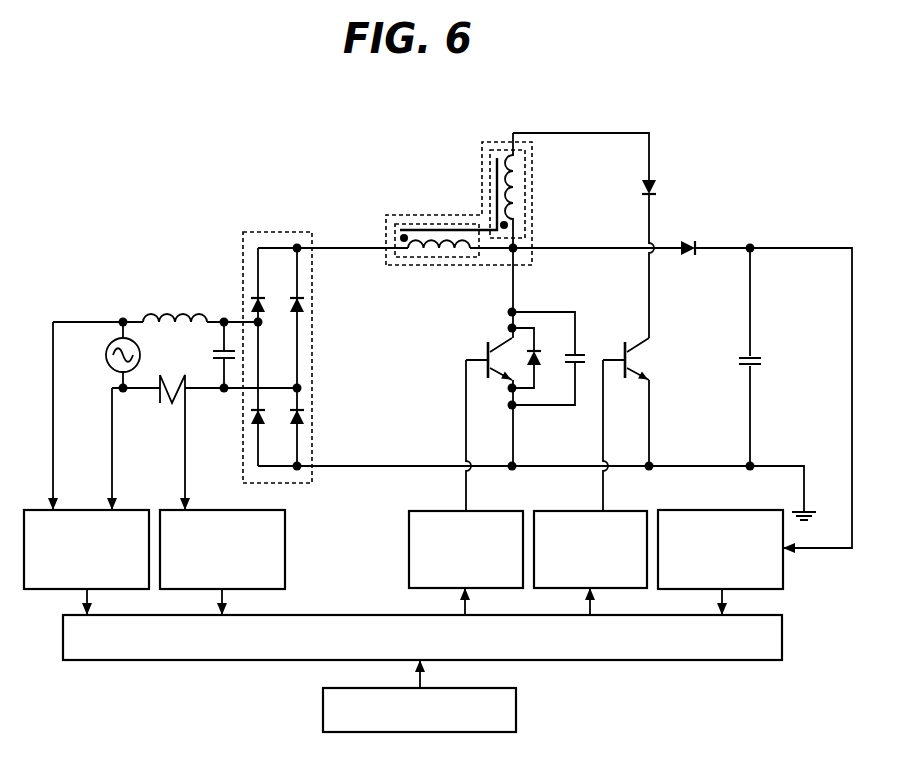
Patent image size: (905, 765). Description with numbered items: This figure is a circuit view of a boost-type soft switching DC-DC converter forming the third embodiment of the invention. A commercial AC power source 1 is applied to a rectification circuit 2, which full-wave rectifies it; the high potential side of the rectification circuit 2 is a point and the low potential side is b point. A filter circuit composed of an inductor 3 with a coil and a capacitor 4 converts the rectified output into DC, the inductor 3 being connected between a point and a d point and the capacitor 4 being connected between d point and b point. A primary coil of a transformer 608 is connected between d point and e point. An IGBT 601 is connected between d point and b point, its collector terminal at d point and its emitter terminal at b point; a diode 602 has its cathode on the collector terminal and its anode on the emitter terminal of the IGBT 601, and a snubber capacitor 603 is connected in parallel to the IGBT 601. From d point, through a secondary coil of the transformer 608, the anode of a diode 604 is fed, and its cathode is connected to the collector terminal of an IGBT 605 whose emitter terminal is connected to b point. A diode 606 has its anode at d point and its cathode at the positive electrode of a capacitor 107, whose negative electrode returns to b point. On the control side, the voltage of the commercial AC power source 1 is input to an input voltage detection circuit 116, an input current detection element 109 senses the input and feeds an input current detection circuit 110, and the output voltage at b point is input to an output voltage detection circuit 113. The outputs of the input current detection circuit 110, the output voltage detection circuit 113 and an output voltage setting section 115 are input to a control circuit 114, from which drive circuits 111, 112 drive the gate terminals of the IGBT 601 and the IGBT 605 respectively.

The commercial AC power source 1 is at (105, 353).
The rectification circuit 2 is at (283, 235).
The inductor 3 is at (180, 302).
The capacitor 4 is at (210, 353).
The capacitor 107 is at (765, 358).
The input current detection element 109 is at (166, 409).
The input current detection circuit 110 is at (240, 507).
The drive circuit 111 is at (487, 509).
The drive circuit 112 is at (622, 509).
The output voltage detection circuit 113 is at (785, 580).
The control circuit 114 is at (785, 638).
The output voltage setting section 115 is at (519, 707).
The input voltage detection circuit 116 is at (45, 592).
The IGBT 601 is at (489, 348).
The diode 602 is at (541, 348).
The snubber capacitor 603 is at (582, 350).
The diode 604 is at (655, 181).
The IGBT 605 is at (655, 362).
The diode 606 is at (689, 241).
The transformer 608 is at (504, 180).
The a point a is at (303, 252).
The b point b is at (303, 468).
The e point e is at (519, 252).